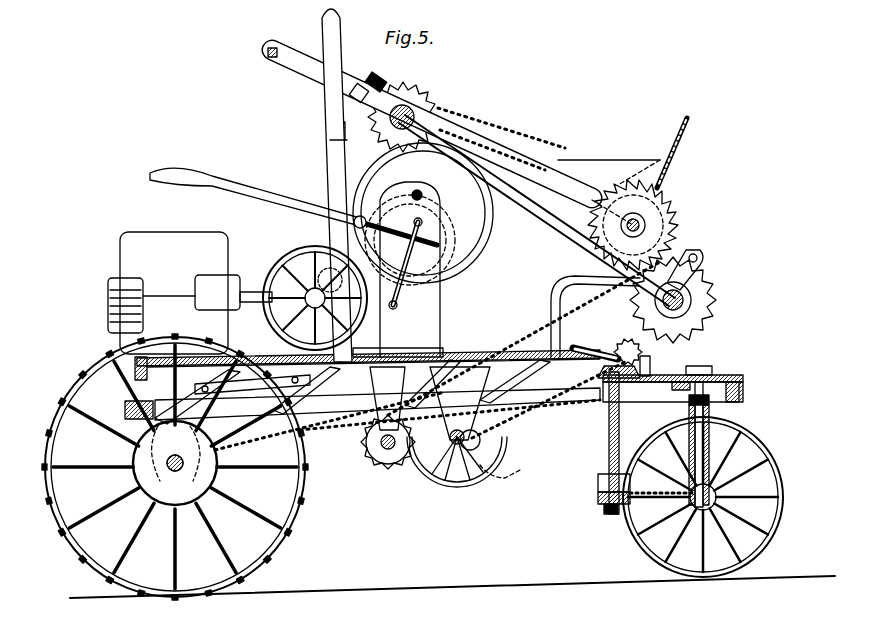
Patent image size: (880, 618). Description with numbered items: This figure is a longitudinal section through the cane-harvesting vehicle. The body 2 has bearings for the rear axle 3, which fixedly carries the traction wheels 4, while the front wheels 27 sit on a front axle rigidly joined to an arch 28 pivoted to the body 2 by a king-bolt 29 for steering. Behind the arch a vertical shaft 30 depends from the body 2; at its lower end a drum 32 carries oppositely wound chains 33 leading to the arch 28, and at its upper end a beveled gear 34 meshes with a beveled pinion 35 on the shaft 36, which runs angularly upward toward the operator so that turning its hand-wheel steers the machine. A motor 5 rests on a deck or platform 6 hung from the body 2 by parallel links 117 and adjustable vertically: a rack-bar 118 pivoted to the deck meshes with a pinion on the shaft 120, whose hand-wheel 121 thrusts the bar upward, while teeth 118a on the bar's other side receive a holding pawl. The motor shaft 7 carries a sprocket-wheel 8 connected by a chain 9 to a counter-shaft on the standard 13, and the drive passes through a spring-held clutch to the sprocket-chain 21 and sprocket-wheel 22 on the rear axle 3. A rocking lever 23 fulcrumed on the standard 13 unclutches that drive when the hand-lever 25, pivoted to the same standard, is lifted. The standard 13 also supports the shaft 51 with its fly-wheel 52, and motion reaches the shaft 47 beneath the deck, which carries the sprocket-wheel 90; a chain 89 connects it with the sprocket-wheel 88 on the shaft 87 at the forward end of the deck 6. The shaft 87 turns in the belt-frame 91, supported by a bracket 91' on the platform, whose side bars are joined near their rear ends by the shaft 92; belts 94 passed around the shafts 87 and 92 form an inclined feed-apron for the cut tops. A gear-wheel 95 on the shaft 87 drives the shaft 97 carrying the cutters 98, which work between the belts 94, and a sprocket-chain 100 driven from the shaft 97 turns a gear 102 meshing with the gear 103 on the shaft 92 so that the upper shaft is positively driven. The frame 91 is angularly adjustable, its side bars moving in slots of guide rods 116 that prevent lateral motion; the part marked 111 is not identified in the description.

The body 2 is at (735, 376).
The rear axle 3 is at (173, 471).
The traction wheels 4 is at (70, 378).
The motor 5 is at (174, 293).
The deck or platform 6 is at (183, 365).
The motor shaft 7 is at (262, 302).
The sprocket-wheel 8 is at (290, 262).
The chain 9 is at (328, 266).
The upright or standard 13 is at (440, 326).
The sprocket-chain 21 is at (300, 432).
The sprocket-wheel 22 is at (175, 463).
The rocking lever 23 is at (425, 280).
The hand-lever 25 is at (250, 184).
The wheels 27 is at (778, 472).
The arch 28 is at (713, 430).
The king-bolt 29 is at (699, 367).
The shaft or spindle 30 is at (609, 450).
The pulley or drum 32 is at (598, 494).
The chains 33 is at (642, 505).
The beveled gear 34 is at (598, 366).
The beveled pinion 35 is at (624, 353).
The shaft 36 is at (480, 346).
The shaft 47 is at (380, 442).
The shaft 51 is at (438, 228).
The fly-wheel 52 is at (470, 242).
The shaft 87 is at (700, 276).
The sprocket-wheel 88 is at (692, 300).
The chain 89 is at (548, 405).
The sprocket-wheel 90 is at (372, 460).
The belt-frame 91 is at (426, 123).
The bracket 91' is at (579, 316).
The shaft 92 is at (390, 120).
The belts 94 is at (560, 234).
The gear-wheel 95 is at (708, 318).
The shaft 97 is at (646, 225).
The cutters 98 is at (668, 208).
The sprocket-chain 100 is at (575, 156).
The gear 102 is at (480, 122).
The spur gear 103 is at (412, 100).
The lever 111 is at (676, 142).
The guide rods 116 is at (324, 18).
The parallel links 117 is at (252, 388).
The rack-bar 118 is at (505, 480).
The teeth 118a is at (480, 440).
The shaft 120 is at (460, 405).
The hand-wheel 121 is at (436, 476).